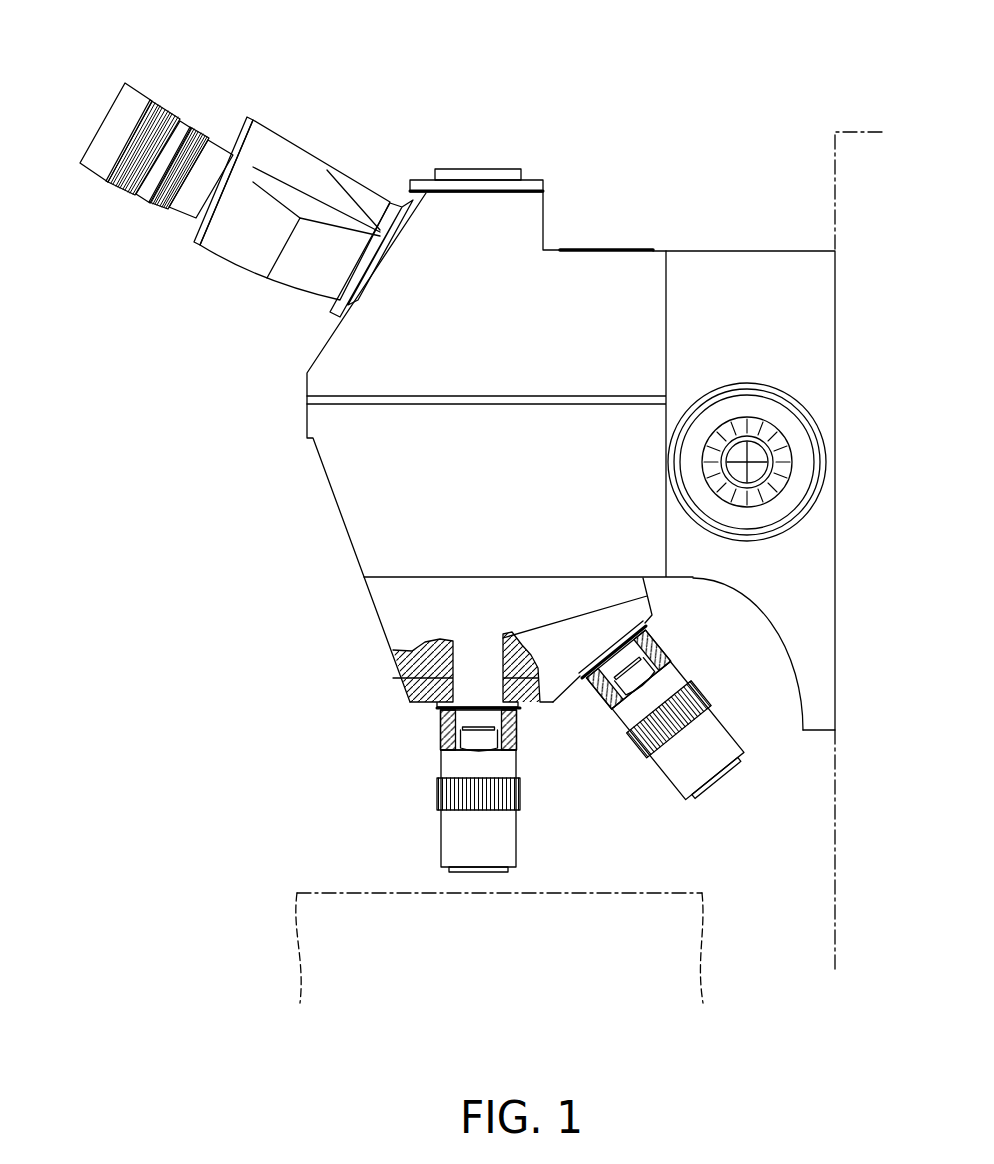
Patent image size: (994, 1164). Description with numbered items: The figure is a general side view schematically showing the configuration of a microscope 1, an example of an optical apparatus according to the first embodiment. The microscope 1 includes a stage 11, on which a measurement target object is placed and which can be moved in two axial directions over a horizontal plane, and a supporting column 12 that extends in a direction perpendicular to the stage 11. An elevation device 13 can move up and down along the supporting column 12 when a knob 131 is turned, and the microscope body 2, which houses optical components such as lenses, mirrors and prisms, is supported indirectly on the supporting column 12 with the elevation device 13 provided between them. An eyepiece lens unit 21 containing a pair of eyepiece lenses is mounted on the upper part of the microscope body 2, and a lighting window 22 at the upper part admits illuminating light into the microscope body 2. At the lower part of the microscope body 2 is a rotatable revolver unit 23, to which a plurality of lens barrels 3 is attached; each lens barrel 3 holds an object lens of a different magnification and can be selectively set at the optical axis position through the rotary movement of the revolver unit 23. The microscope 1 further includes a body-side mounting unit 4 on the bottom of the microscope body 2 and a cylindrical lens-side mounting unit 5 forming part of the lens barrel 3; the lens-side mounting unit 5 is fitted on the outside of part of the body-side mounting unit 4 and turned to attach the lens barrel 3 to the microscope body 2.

The microscope 1 is at (652, 101).
The microscope body 2 is at (533, 169).
The lens barrel 3 is at (515, 760).
The body-side mounting unit 4 is at (522, 705).
The lens-side mounting unit 5 is at (515, 732).
The stage 11 is at (590, 893).
The supporting column 12 is at (853, 130).
The elevation device 13 is at (743, 262).
The knob 131 is at (752, 402).
The eyepiece lens unit 21 is at (293, 152).
The lighting window 22 is at (607, 250).
The revolver unit 23 is at (380, 606).